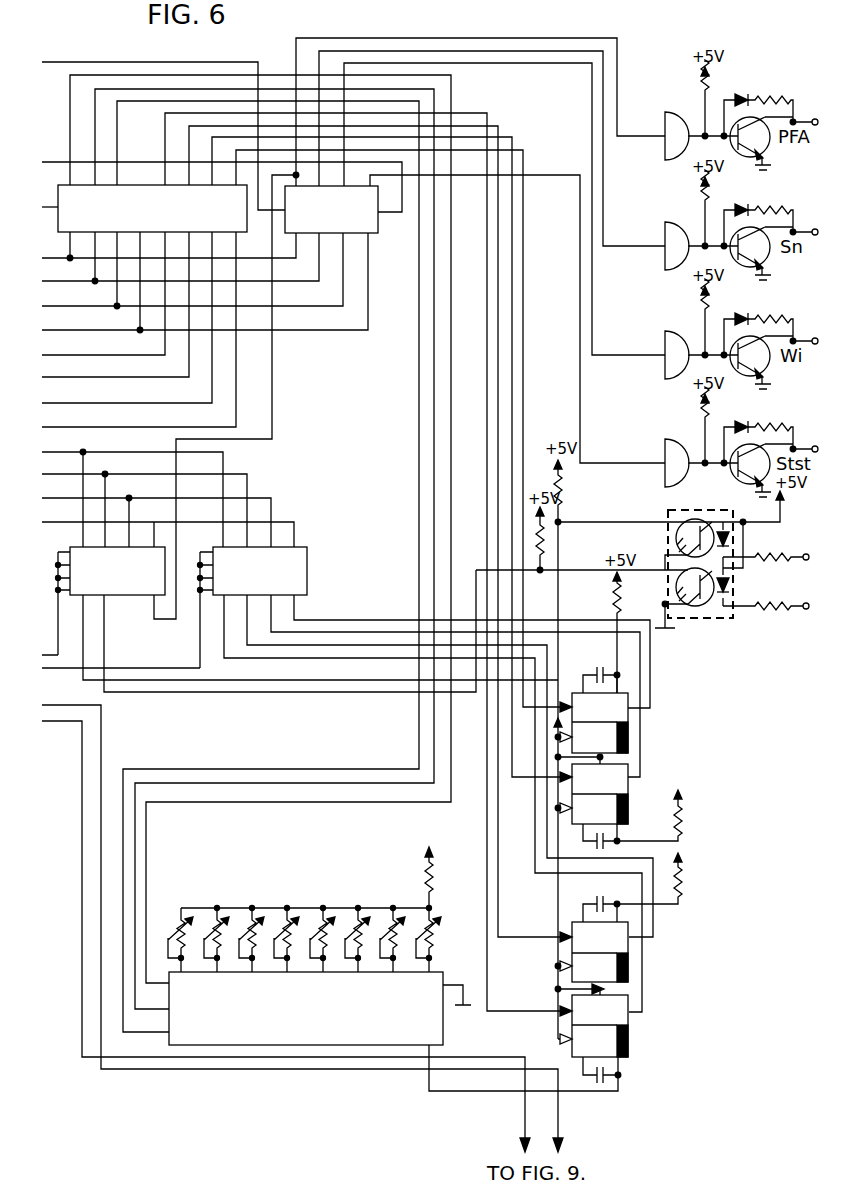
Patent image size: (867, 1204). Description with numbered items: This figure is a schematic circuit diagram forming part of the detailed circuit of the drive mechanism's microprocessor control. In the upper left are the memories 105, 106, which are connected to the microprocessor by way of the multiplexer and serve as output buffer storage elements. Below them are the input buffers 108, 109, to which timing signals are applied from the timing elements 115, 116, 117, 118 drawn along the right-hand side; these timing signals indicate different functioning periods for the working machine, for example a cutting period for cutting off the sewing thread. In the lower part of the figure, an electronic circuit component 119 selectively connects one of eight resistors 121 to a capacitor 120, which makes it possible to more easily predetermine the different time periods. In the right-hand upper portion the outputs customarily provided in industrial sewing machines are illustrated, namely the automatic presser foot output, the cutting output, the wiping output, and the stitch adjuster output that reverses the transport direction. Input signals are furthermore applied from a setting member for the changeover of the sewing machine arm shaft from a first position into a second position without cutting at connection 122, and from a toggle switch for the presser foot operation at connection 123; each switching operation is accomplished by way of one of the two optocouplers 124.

The memory 105 is at (133, 193).
The memory 106 is at (372, 226).
The input buffer 108 is at (135, 594).
The input buffer 109 is at (303, 573).
The timing element 115 is at (608, 711).
The timing element 116 is at (608, 778).
The timing element 117 is at (610, 938).
The timing element 118 is at (607, 1036).
The electronic circuit component 119 is at (243, 1030).
The capacitor 120 is at (605, 1082).
The resistors 121 is at (296, 918).
The connection 122 is at (810, 548).
The connection 123 is at (803, 609).
The optocouplers 124 is at (703, 618).